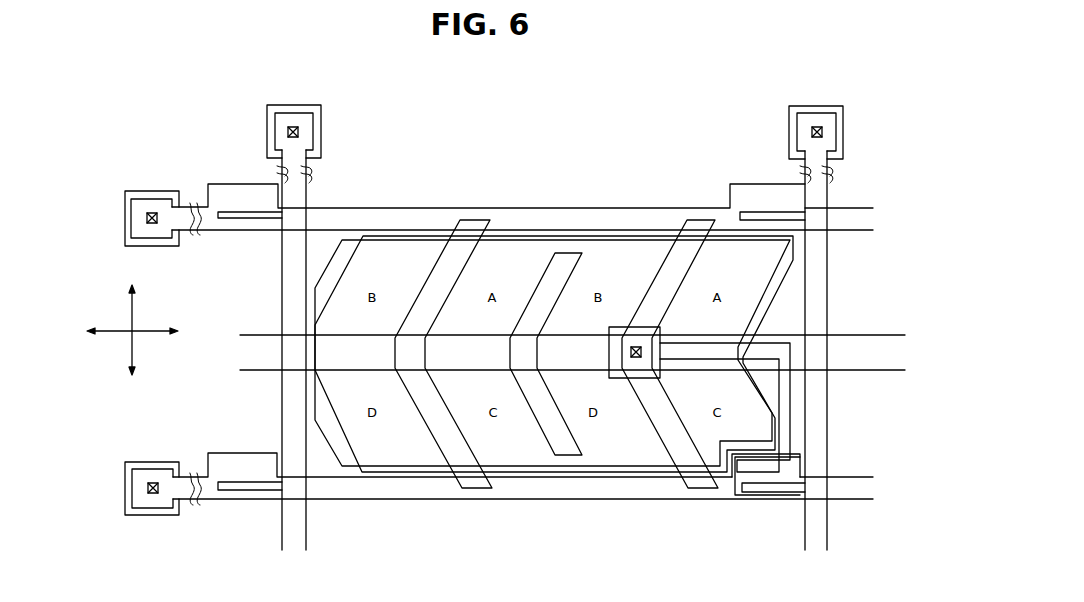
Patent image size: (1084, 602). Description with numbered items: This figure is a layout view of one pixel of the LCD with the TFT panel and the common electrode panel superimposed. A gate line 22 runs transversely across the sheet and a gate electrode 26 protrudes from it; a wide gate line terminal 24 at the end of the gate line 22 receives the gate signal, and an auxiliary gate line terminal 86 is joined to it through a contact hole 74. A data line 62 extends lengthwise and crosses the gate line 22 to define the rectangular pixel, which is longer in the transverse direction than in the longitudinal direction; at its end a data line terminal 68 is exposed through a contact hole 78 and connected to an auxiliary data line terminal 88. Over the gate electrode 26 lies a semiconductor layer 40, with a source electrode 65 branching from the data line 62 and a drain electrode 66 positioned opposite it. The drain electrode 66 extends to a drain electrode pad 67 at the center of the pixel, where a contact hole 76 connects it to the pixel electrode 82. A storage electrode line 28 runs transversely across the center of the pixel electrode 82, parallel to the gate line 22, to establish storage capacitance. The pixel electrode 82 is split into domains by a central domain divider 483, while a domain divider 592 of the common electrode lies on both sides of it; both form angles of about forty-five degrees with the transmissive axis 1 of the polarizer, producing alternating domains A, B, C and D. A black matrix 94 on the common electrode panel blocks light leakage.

The transmissive axis 1 is at (125, 322).
The gate line 22 is at (540, 500).
The gate line terminal 24 is at (152, 468).
The gate electrode 26 is at (805, 458).
The storage electrode line 28 is at (253, 333).
The semiconductor layer 40 is at (732, 492).
The data line 62 is at (829, 272).
The source electrode 65 is at (781, 497).
The drain electrode 66 is at (752, 478).
The drain electrode pad 67 is at (661, 328).
The data line terminal 68 is at (825, 106).
The contact hole 74 is at (147, 488).
The contact hole 76 is at (636, 359).
The contact hole 78 is at (814, 122).
The pixel electrode 82 is at (336, 250).
The auxiliary gate line terminal 86 is at (155, 516).
The auxiliary data line terminal 88 is at (788, 132).
The black matrix 94 is at (422, 474).
The domain divider 483 is at (567, 252).
The domain divider 592 is at (476, 218).